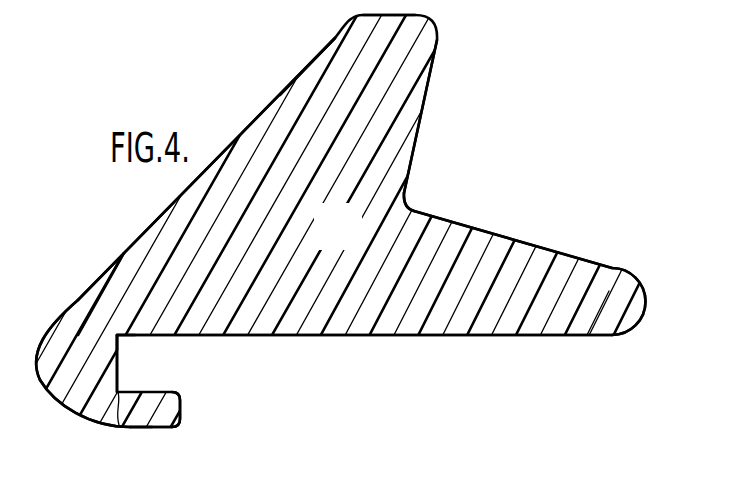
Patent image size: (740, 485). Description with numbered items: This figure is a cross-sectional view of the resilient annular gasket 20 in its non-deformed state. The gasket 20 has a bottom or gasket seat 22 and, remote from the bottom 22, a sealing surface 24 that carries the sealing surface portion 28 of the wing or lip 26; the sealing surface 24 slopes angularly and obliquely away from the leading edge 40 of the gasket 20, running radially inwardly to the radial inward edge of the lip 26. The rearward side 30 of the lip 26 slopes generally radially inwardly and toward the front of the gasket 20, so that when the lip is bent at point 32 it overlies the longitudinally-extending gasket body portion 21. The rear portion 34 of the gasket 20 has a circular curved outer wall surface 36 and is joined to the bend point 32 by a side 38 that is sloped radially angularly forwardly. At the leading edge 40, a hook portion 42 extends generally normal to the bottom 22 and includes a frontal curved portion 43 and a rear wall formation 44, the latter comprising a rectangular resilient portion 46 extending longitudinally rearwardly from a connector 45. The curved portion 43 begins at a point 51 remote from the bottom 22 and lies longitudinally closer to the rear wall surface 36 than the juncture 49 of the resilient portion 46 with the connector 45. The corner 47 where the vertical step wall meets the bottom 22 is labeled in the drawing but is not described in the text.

The resilient annular gasket 20 is at (88, 306).
The gasket body portion 21 is at (350, 238).
The bottom or gasket seat 22 is at (446, 337).
The sealing surface 24 is at (257, 134).
The wing or lip 26 is at (412, 52).
The sealing surface portion 28 is at (302, 69).
The rearward side of lip 30 is at (431, 105).
The bend point 32 is at (415, 203).
The rear portion 34 is at (604, 313).
The circular curved outer wall surface 36 is at (644, 316).
The side of rear portion 38 is at (537, 243).
The leading edge 40 is at (90, 316).
The hook portion 42 is at (64, 338).
The frontal curved portion 43 is at (92, 402).
The rear wall formation 44 is at (121, 377).
The connector 45 is at (164, 433).
The rectangular resilient portion 46 is at (178, 416).
The corner 47 is at (124, 341).
The juncture 49 is at (104, 423).
The point 51 is at (147, 434).